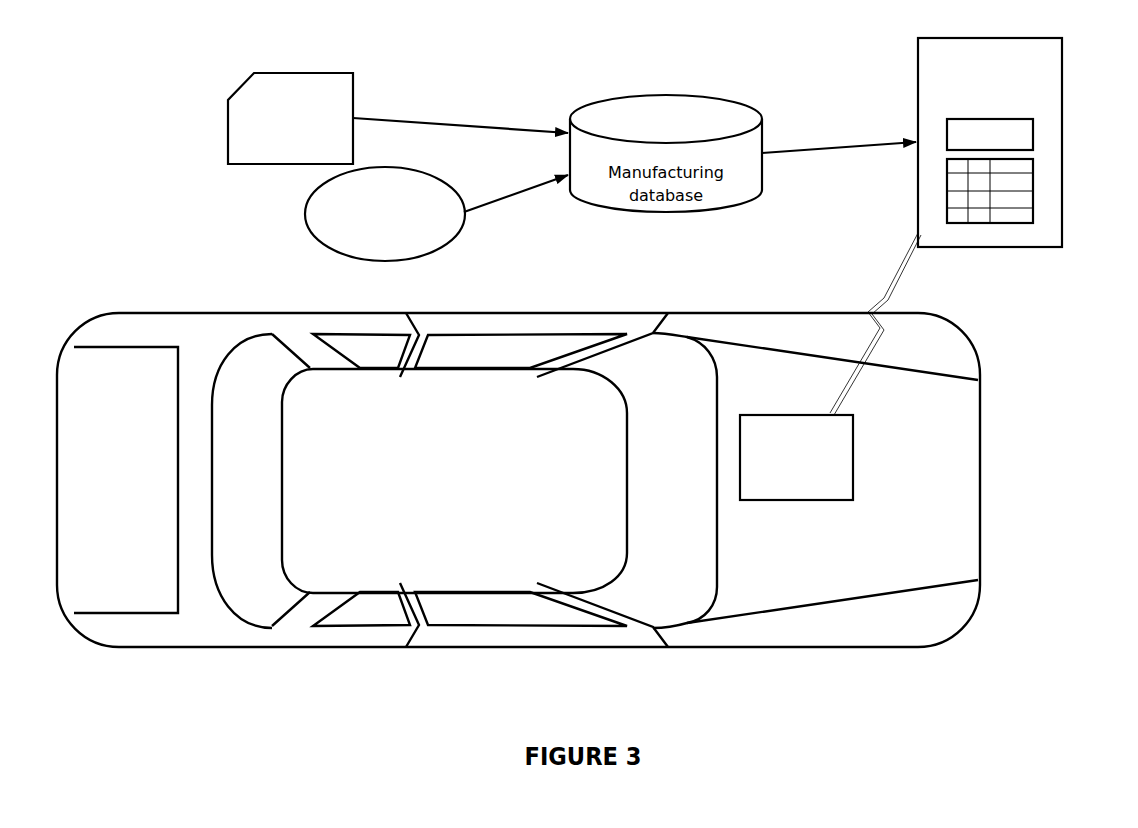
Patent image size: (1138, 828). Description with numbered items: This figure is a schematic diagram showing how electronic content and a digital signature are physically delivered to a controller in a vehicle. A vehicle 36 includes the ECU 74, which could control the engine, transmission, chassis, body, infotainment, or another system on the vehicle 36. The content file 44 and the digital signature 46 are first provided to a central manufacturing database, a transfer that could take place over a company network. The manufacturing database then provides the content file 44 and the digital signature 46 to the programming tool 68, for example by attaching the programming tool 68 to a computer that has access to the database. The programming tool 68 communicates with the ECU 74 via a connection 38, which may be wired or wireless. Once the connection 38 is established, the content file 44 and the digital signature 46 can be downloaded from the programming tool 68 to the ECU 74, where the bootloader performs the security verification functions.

The vehicle 36 is at (215, 312).
The connection 38 is at (895, 278).
The content file 44 is at (288, 73).
The digital signature 46 is at (457, 233).
The programming tool 68 is at (1062, 138).
The ECU 74 is at (853, 454).